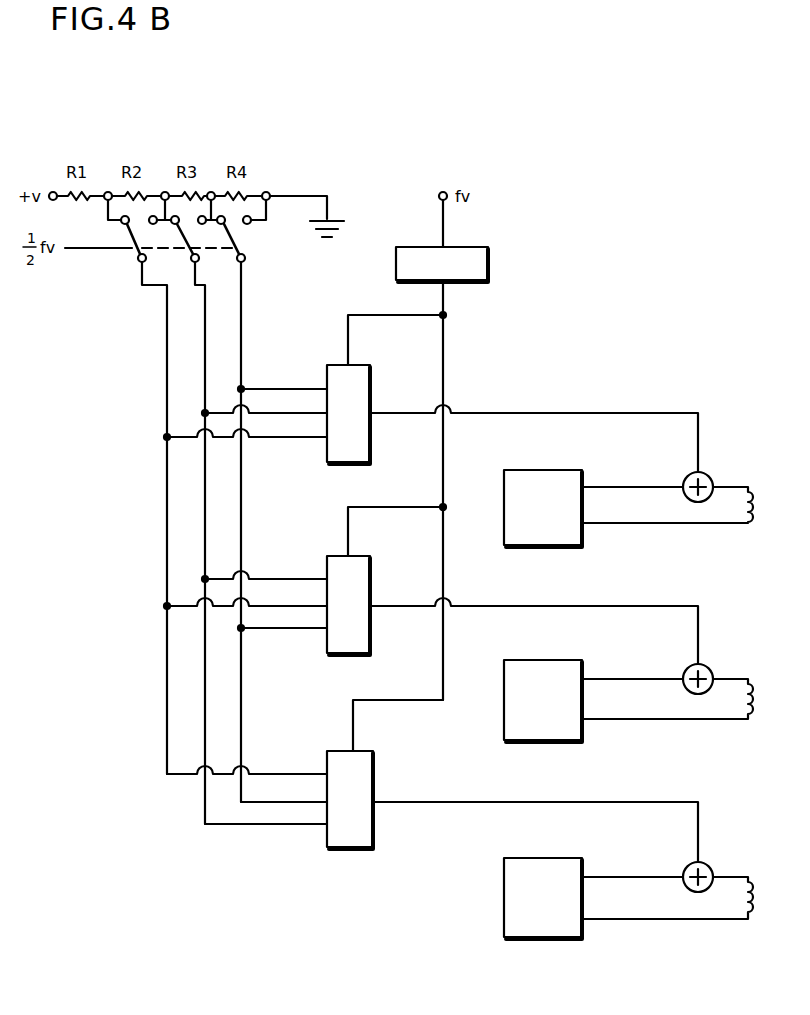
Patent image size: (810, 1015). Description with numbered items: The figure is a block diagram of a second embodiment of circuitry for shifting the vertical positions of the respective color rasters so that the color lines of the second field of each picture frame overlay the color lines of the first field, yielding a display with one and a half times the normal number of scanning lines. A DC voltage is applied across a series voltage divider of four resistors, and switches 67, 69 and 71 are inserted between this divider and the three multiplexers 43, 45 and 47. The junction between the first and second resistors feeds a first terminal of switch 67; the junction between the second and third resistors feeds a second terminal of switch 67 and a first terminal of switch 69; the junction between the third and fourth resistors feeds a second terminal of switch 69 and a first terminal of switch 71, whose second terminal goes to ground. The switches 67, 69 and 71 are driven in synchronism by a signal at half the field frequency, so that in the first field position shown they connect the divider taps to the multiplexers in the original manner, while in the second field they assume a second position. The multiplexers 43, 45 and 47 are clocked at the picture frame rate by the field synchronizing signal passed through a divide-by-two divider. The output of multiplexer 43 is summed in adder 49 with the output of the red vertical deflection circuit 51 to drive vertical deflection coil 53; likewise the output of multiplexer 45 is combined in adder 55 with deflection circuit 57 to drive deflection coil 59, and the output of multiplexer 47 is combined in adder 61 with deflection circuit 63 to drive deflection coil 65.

The multiplexer 43 is at (340, 364).
The multiplexer 45 is at (340, 555).
The multiplexer 47 is at (340, 750).
The adder 49 is at (708, 474).
The red vertical deflection circuit 51 is at (578, 540).
The vertical deflection coil 53 is at (757, 520).
The adder 55 is at (708, 666).
The deflection circuit 57 is at (566, 742).
The deflection coil 59 is at (760, 722).
The adder 61 is at (707, 863).
The deflection circuit 63 is at (562, 939).
The deflection coil 65 is at (760, 920).
The switch 67 is at (128, 250).
The switch 69 is at (185, 252).
The switch 71 is at (236, 250).